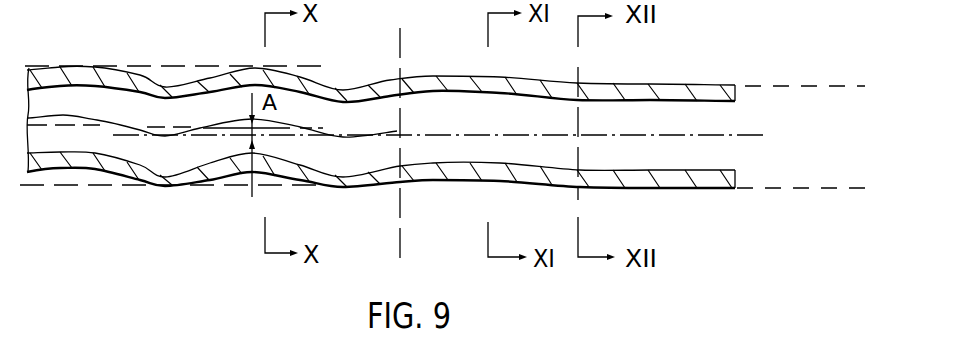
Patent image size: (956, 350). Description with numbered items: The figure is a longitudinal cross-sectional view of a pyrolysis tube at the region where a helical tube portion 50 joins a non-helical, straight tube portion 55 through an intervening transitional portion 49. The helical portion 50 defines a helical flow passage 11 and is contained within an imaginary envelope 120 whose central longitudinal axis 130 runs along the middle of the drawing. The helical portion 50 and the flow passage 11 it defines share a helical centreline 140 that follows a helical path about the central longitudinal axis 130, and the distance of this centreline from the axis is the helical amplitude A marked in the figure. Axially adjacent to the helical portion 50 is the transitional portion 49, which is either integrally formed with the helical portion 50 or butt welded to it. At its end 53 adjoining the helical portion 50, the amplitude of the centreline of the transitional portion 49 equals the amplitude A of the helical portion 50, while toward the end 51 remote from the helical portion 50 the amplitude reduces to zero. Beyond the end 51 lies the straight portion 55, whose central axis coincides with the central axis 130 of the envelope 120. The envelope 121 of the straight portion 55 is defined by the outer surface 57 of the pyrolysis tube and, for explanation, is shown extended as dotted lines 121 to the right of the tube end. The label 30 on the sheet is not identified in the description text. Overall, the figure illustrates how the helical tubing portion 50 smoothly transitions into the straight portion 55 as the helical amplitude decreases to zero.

The helical flow passage 11 is at (343, 113).
The corrugated plate 30 is at (166, 77).
The transitional portion 49 is at (535, 173).
The helical tube portion 50 is at (335, 177).
The remote end of transitional portion 51 is at (567, 80).
The end of transitional portion adjoining helical portion 53 is at (410, 92).
The non-helical tube portion 55 is at (677, 95).
The outer surface 57 is at (618, 85).
The imaginary envelope 120 is at (122, 185).
The envelope of straight portion 121 is at (783, 87).
The central longitudinal axis 130 is at (85, 127).
The helical centreline 140 is at (78, 115).